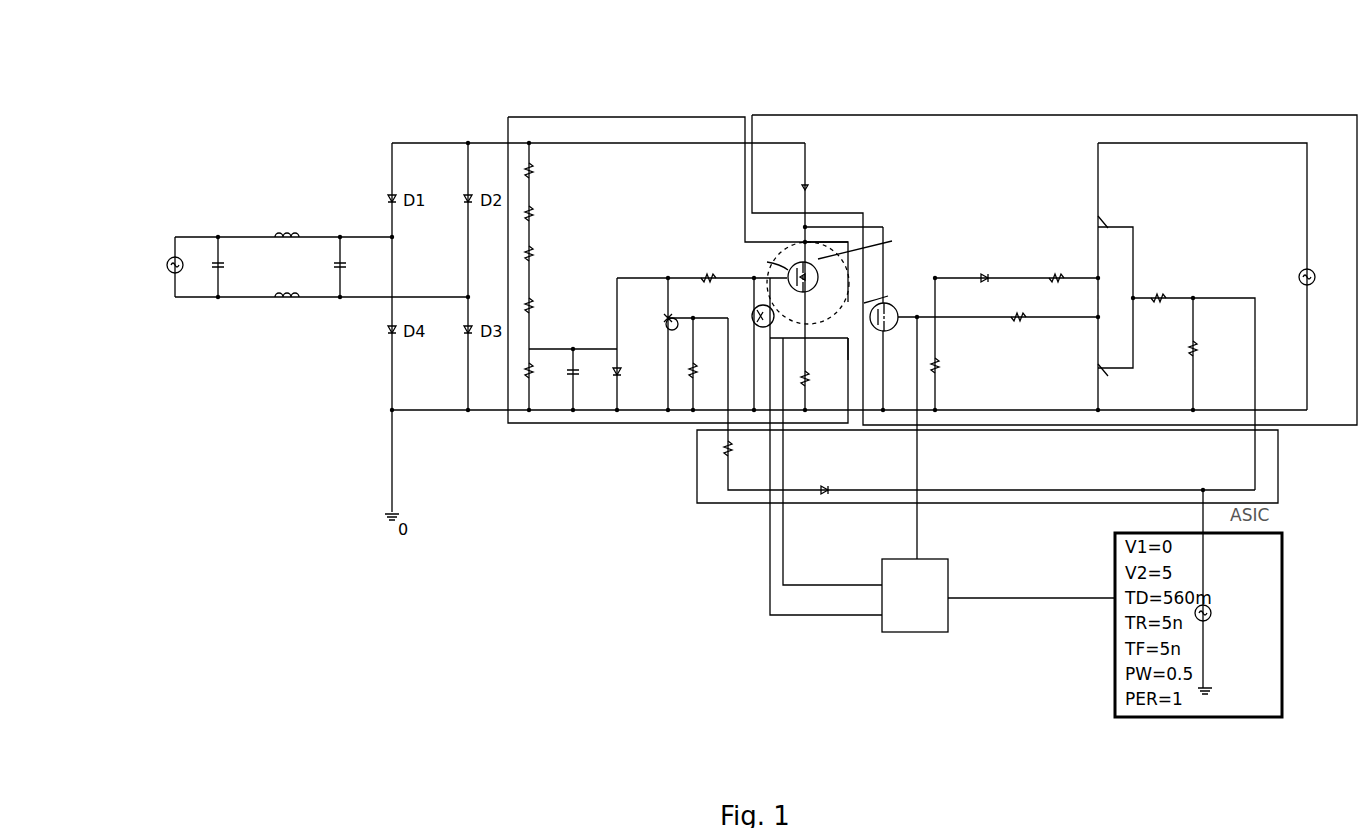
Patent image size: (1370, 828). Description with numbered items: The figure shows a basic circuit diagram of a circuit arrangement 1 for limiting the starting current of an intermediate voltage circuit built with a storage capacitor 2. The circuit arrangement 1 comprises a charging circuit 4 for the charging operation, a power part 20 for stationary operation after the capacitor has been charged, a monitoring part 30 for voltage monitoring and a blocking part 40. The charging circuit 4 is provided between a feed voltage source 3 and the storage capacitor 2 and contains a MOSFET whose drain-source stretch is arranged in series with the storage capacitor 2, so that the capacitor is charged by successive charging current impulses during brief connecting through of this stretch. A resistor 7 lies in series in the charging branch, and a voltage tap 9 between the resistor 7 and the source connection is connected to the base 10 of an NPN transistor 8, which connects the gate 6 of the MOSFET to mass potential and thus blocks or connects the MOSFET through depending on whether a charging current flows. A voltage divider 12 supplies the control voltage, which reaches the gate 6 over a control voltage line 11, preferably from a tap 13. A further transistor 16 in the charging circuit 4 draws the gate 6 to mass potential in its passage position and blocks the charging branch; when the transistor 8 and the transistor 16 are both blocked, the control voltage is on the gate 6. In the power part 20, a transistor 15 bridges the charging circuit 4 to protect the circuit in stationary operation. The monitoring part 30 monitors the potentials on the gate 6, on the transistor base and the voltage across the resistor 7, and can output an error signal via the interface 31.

The circuit arrangement 1 is at (538, 102).
The storage capacitor 2 is at (811, 187).
The feed voltage source 3 is at (176, 218).
The charging circuit 4 is at (686, 117).
The gate 6 is at (828, 277).
The resistor 7 is at (813, 398).
The transistor 8 is at (757, 330).
The voltage tap 9 is at (981, 319).
The base 10 is at (838, 338).
The control voltage line 11 is at (690, 276).
The voltage divider 12 is at (566, 237).
The tap 13 is at (616, 346).
The transistor 15 is at (902, 303).
The transistor 16 is at (660, 318).
The power part 20 is at (945, 116).
The monitoring part 30 is at (989, 653).
The interface 31 is at (952, 597).
The blocking part 40 is at (750, 505).